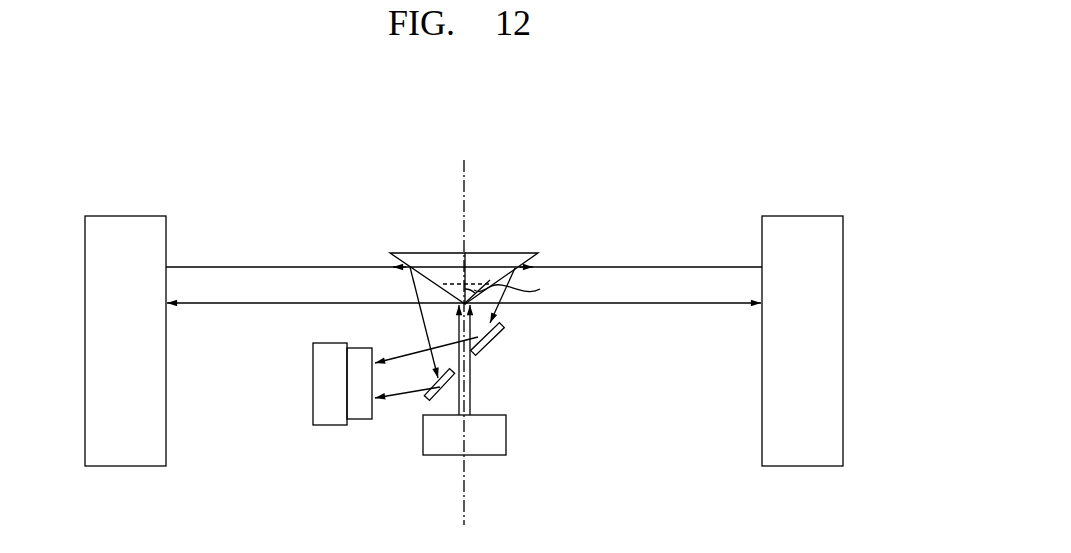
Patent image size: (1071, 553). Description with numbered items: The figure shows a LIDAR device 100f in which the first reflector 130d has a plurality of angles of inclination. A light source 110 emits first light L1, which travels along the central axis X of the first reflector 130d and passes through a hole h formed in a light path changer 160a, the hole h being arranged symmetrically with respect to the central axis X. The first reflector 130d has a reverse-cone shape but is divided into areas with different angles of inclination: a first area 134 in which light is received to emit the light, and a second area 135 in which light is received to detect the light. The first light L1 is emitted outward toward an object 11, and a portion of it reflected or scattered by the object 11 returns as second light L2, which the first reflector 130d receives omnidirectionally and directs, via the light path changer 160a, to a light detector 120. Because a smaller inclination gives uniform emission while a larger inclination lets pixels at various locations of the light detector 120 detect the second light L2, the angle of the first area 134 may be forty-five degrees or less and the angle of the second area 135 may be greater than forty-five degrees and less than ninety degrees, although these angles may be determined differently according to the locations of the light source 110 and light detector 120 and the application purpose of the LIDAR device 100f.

The LIDAR device 100f is at (731, 171).
The object 11 is at (126, 462).
The light source 110 is at (496, 437).
The light detector 120 is at (329, 421).
The first reflector 130d is at (568, 201).
The first area 134 is at (469, 292).
The second area 135 is at (508, 262).
The light path changer 160a is at (504, 336).
The hole h is at (474, 368).
The central axis X is at (463, 331).
The first light L1 is at (621, 306).
The second light L2 is at (621, 265).